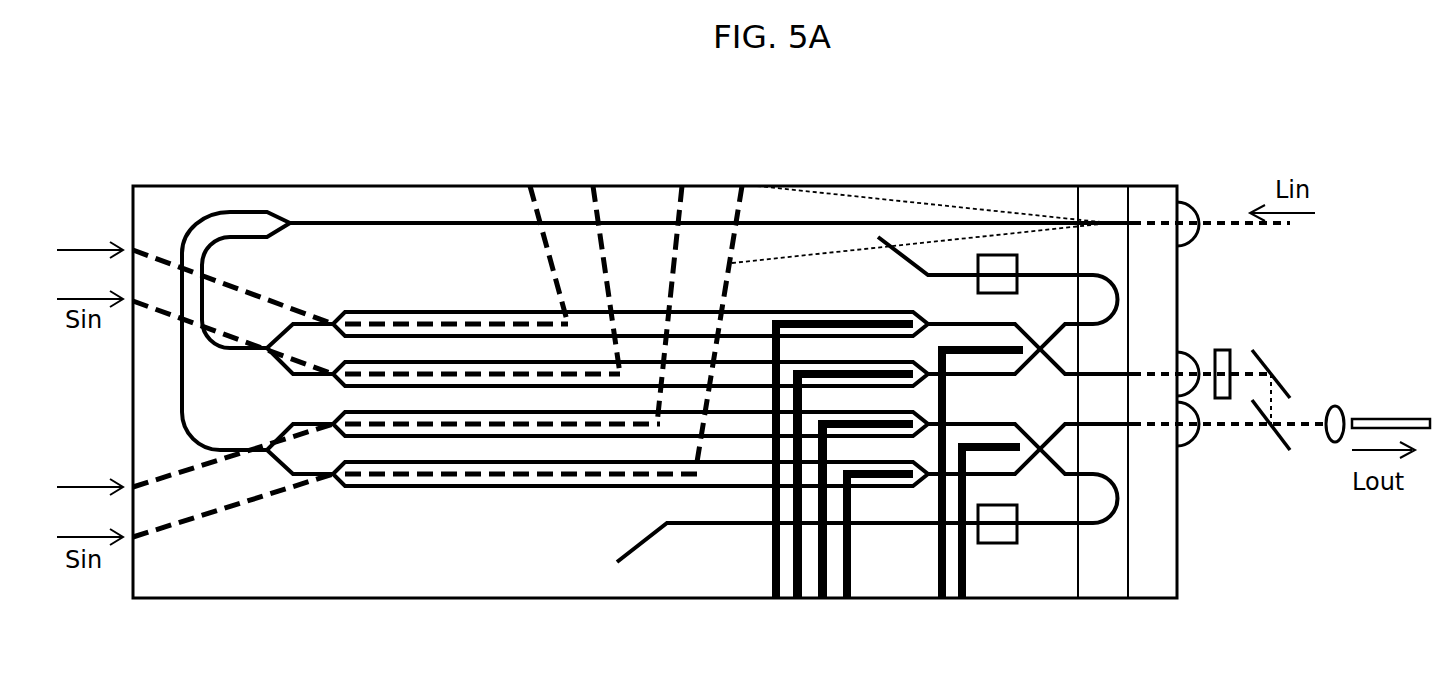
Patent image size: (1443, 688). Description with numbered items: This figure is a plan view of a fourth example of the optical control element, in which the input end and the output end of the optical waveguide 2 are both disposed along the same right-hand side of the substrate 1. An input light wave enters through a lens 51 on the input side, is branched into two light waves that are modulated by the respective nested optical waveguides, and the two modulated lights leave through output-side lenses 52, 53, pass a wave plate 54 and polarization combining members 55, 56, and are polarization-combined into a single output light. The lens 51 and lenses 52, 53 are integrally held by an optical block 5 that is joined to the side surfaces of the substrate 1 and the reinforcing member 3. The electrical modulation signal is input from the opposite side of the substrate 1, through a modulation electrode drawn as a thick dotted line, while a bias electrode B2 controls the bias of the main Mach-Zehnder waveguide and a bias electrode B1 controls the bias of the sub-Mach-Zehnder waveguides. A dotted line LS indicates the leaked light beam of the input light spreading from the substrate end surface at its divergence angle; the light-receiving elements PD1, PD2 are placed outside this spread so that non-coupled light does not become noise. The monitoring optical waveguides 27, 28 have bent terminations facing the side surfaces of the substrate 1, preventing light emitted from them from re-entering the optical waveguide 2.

The substrate 1 is at (386, 186).
The optical waveguide 2 is at (369, 511).
The reinforcing member 3 is at (1098, 598).
The optical block 5 is at (1148, 598).
The monitor waveguide U-turn to PD1 27 is at (1120, 503).
The monitor waveguide U-turn to PD2 28 is at (1117, 282).
The lens 51 is at (1195, 210).
The lens 52 is at (1185, 353).
The lens 53 is at (1190, 445).
The wave plate 54 is at (1222, 350).
The polarization combining member 55 is at (1283, 382).
The polarization combining member 56 is at (1283, 440).
The leaked light beam LS is at (835, 190).
The light-receiving element PD1 is at (998, 543).
The light-receiving element PD2 is at (995, 255).
The bias electrode B1 is at (772, 565).
The bias electrode B2 is at (938, 565).